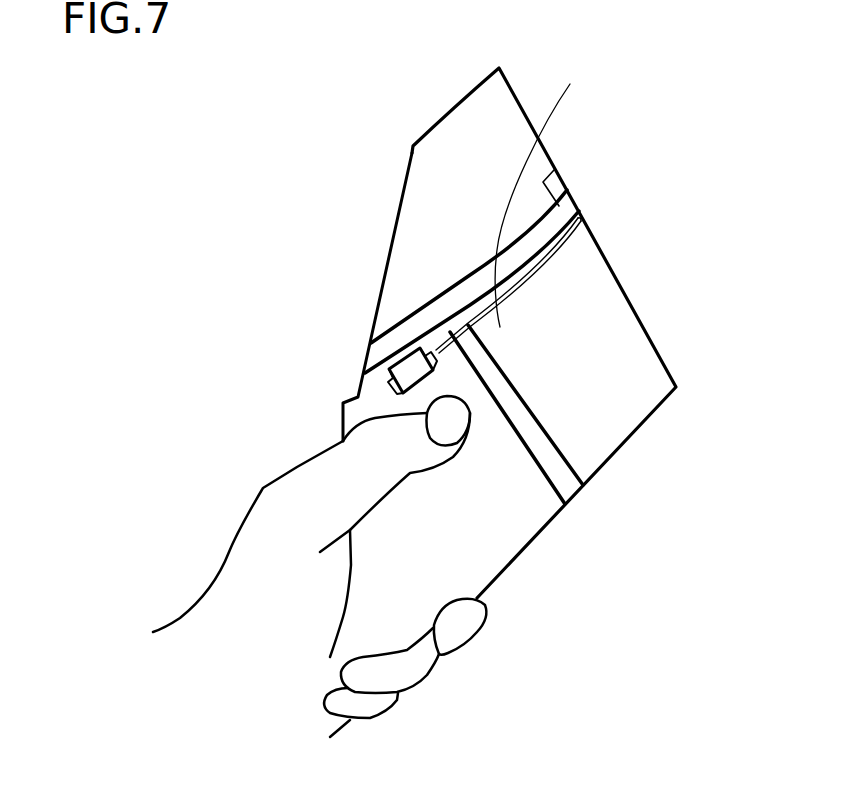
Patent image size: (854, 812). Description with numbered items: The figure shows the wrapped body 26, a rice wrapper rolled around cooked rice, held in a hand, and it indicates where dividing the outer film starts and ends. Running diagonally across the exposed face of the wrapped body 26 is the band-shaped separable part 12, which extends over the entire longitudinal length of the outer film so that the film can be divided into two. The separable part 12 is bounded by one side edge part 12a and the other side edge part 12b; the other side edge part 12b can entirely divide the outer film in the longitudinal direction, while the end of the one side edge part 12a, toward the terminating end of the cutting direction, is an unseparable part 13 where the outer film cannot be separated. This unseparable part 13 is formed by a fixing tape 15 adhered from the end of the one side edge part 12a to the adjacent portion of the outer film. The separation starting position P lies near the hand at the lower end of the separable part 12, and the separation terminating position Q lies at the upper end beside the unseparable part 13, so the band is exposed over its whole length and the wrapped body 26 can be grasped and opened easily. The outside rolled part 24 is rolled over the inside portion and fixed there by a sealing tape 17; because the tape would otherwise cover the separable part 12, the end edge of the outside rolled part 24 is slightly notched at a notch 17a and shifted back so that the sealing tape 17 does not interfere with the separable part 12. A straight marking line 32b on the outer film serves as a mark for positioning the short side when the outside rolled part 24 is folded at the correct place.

The separable part 12 is at (553, 482).
The one side edge part 12a is at (463, 282).
The other side edge part 12b is at (380, 357).
The unseparable part 13 is at (602, 175).
The fixing tape 15 is at (555, 182).
The sealing tape 17 is at (388, 370).
The notch 17a is at (437, 358).
The outside rolled part 24 is at (541, 193).
The wrapped body 26 is at (701, 262).
The marking line 32b is at (575, 225).
The separation starting position P is at (450, 324).
The separation terminating position Q is at (597, 206).